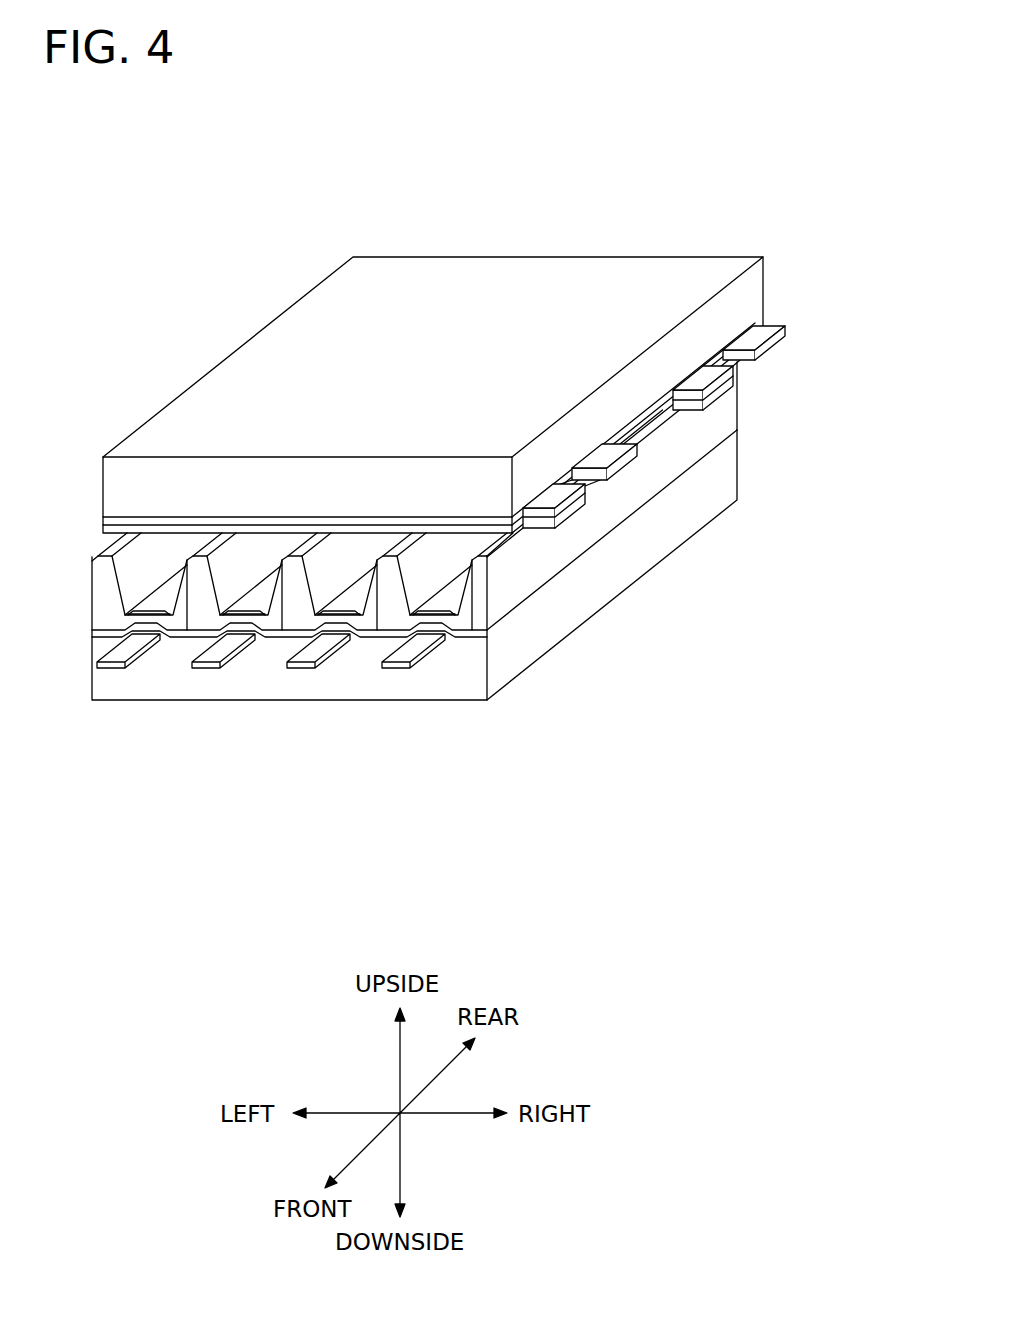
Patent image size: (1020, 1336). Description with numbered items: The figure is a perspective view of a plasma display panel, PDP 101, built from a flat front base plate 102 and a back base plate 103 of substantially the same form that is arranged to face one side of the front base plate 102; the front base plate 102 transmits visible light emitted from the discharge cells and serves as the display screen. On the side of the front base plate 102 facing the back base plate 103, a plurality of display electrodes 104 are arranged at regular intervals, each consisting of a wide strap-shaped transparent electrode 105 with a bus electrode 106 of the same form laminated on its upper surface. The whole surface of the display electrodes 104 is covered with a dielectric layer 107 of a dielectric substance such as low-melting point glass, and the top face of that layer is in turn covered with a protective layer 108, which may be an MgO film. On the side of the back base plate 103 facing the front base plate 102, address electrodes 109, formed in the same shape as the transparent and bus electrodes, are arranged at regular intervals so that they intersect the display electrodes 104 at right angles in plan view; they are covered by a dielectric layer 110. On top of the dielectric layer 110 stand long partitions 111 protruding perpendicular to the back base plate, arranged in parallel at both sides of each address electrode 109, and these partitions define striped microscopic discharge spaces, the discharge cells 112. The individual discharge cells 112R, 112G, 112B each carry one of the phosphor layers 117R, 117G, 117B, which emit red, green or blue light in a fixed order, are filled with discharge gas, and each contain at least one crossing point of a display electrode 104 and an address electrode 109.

The PDP 101 is at (683, 167).
The front base plate 102 is at (105, 487).
The back base plate 103 is at (712, 505).
The display electrode 104 is at (537, 540).
The transparent electrode 105 is at (553, 500).
The bus electrode 106 is at (607, 462).
The dielectric layer 107 is at (103, 523).
The protective layer 108 is at (103, 533).
The address electrode 109 is at (110, 669).
The dielectric layer 110 is at (93, 636).
The partition 111 is at (663, 482).
The discharge cell 112 is at (400, 403).
The discharge cell 112R is at (160, 572).
The discharge cell 112G is at (250, 572).
The discharge cell 112B is at (340, 572).
The phosphor layer 117R is at (147, 620).
The phosphor layer 117G is at (246, 620).
The phosphor layer 117B is at (341, 620).